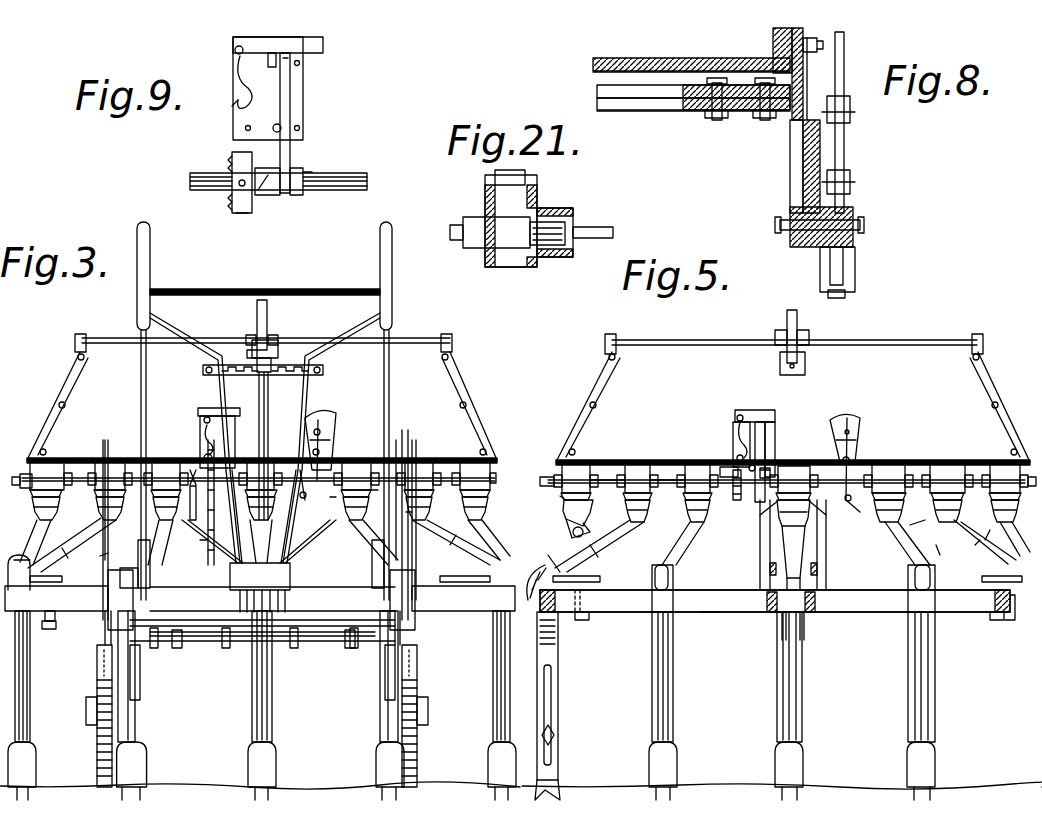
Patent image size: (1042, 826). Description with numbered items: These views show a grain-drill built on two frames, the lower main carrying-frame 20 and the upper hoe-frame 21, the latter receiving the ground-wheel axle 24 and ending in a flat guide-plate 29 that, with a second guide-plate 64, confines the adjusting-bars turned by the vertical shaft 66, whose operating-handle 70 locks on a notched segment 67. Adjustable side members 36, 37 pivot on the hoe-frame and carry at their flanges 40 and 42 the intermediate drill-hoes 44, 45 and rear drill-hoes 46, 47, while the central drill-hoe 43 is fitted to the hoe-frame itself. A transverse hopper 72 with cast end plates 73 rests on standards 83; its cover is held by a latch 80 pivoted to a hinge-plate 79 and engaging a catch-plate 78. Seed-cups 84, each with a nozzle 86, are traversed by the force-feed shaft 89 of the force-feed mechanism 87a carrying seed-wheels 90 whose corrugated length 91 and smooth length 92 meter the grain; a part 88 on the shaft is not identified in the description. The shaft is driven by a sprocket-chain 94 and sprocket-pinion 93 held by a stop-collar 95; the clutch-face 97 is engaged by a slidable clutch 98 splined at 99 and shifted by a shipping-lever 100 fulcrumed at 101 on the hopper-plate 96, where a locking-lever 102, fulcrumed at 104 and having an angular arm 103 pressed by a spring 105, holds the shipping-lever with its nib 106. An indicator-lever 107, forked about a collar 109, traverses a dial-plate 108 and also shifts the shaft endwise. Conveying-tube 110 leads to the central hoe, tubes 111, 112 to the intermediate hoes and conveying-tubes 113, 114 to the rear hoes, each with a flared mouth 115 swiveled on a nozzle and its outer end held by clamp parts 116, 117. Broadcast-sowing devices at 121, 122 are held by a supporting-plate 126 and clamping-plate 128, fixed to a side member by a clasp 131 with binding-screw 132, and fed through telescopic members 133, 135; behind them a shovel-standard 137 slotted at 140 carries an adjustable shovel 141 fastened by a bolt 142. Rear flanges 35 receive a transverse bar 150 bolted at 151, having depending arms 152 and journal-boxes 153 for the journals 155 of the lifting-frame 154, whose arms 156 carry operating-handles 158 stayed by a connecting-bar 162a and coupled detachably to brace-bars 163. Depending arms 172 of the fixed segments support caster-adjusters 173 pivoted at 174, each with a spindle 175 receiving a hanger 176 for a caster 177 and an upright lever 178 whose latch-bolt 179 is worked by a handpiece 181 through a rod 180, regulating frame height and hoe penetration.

In FIG. 8, the main carrying-frame 20 is at (632, 90).
In FIG. 3, the main carrying-frame 20 is at (310, 645).
In FIG. 3, the hoe-frame 21 is at (285, 600).
In FIG. 5, the hoe-frame 21 is at (815, 612).
In FIG. 5, the axle 24 is at (770, 612).
In FIG. 3, the guide-plate 29 is at (290, 575).
In FIG. 8, the flanges 35 is at (740, 95).
In FIG. 3, the flanges 35 is at (330, 665).
In FIG. 3, the adjustable side member 36 is at (463, 598).
In FIG. 5, the adjustable side member 36 is at (775, 601).
In FIG. 3, the adjustable side member 37 is at (80, 620).
In FIG. 5, the adjustable side member 37 is at (712, 608).
In FIG. 3, the flange 40 is at (385, 590).
In FIG. 5, the flange 40 is at (945, 602).
In FIG. 3, the flange 42 is at (40, 600).
In FIG. 3, the central drill-hoe 43 is at (272, 715).
In FIG. 5, the central drill-hoe 43 is at (802, 716).
In FIG. 3, the intermediate drill-hoe 44 is at (385, 740).
In FIG. 5, the intermediate drill-hoe 44 is at (935, 722).
In FIG. 3, the intermediate drill-hoe 45 is at (142, 735).
In FIG. 5, the intermediate drill-hoe 45 is at (673, 720).
In FIG. 3, the rear drill-hoe 46 is at (490, 688).
In FIG. 3, the rear drill-hoe 47 is at (30, 672).
In FIG. 3, the guide-plate 64 is at (217, 550).
In FIG. 3, the vertical shaft 66 is at (268, 405).
In FIG. 3, the segment 67 is at (240, 378).
In FIG. 3, the operating-handle 70 is at (247, 354).
In FIG. 3, the hopper 72 is at (116, 360).
In FIG. 5, the hopper 72 is at (680, 358).
In FIG. 3, the end plates 73 is at (478, 418).
In FIG. 5, the end plates 73 is at (995, 385).
In FIG. 3, the catch-plate 78 is at (248, 335).
In FIG. 5, the catch-plate 78 is at (778, 330).
In FIG. 3, the hinge-plate 79 is at (276, 345).
In FIG. 5, the hinge-plate 79 is at (805, 363).
In FIG. 3, the latch 80 is at (267, 313).
In FIG. 5, the latch 80 is at (797, 318).
In FIG. 5, the standards 83 is at (822, 548).
In FIG. 21, the seed-cups 84 is at (565, 198).
In FIG. 3, the seed-cups 84 is at (333, 505).
In FIG. 5, the seed-cups 84 is at (553, 500).
In FIG. 3, the nozzle 86 is at (498, 500).
In FIG. 5, the nozzle 86 is at (910, 500).
In FIG. 21, the force-feed mechanism 87a is at (515, 253).
In FIG. 3, the collar 88 is at (370, 490).
In FIG. 9, the force-feed shaft 89 is at (357, 190).
In FIG. 21, the force-feed shaft 89 is at (608, 227).
In FIG. 3, the force-feed shaft 89 is at (80, 478).
In FIG. 5, the force-feed shaft 89 is at (905, 481).
In FIG. 21, the force-feed seed-wheels 90 is at (485, 215).
In FIG. 3, the force-feed seed-wheels 90 is at (20, 484).
In FIG. 21, the corrugated length 91 is at (555, 222).
In FIG. 5, the corrugated length 91 is at (610, 478).
In FIG. 21, the smooth length 92 is at (487, 240).
In FIG. 5, the smooth length 92 is at (665, 478).
In FIG. 9, the sprocket-pinion 93 is at (240, 210).
In FIG. 5, the sprocket-pinion 93 is at (738, 498).
In FIG. 3, the sprocket-chain 94 is at (214, 530).
In FIG. 9, the stop-collar 95 is at (232, 170).
In FIG. 3, the stop-collar 95 is at (175, 515).
In FIG. 5, the stop-collar 95 is at (722, 478).
In FIG. 9, the hopper-plate 96 is at (303, 118).
In FIG. 5, the hopper-plate 96 is at (768, 438).
In FIG. 9, the clutch-face 97 is at (268, 195).
In FIG. 3, the clutch-face 97 is at (198, 497).
In FIG. 9, the slidable clutch 98 is at (300, 195).
In FIG. 9, the key or spline 99 is at (305, 172).
In FIG. 5, the key or spline 99 is at (768, 466).
In FIG. 9, the shipping-lever 100 is at (290, 92).
In FIG. 5, the shipping-lever 100 is at (765, 425).
In FIG. 9, the fulcrum 101 is at (281, 130).
In FIG. 5, the fulcrum 101 is at (755, 465).
In FIG. 9, the locking-lever 102 is at (323, 45).
In FIG. 3, the locking-lever 102 is at (238, 410).
In FIG. 5, the locking-lever 102 is at (740, 410).
In FIG. 9, the angular arm 103 is at (238, 62).
In FIG. 3, the angular arm 103 is at (200, 424).
In FIG. 5, the angular arm 103 is at (738, 430).
In FIG. 9, the fulcrum 104 is at (235, 48).
In FIG. 5, the fulcrum 104 is at (737, 418).
In FIG. 9, the spring 105 is at (237, 98).
In FIG. 3, the spring 105 is at (200, 445).
In FIG. 5, the spring 105 is at (733, 445).
In FIG. 9, the shoulder or nib 106 is at (290, 62).
In FIG. 5, the shoulder or nib 106 is at (770, 422).
In FIG. 3, the indicator-lever 107 is at (325, 450).
In FIG. 5, the indicator-lever 107 is at (855, 445).
In FIG. 3, the dial-plate 108 is at (336, 425).
In FIG. 5, the dial-plate 108 is at (858, 420).
In FIG. 3, the collar 109 is at (315, 500).
In FIG. 5, the collar 109 is at (855, 508).
In FIG. 3, the conveying-tube 110 is at (272, 530).
In FIG. 5, the conveying-tube 110 is at (772, 545).
In FIG. 3, the conveying-tube 111 is at (378, 550).
In FIG. 5, the conveying-tube 111 is at (900, 560).
In FIG. 3, the conveying-tube 112 is at (168, 542).
In FIG. 5, the conveying-tube 112 is at (692, 545).
In FIG. 3, the conveying-tube 113 is at (492, 532).
In FIG. 5, the conveying-tube 113 is at (1015, 530).
In FIG. 3, the conveying-tube 114 is at (30, 535).
In FIG. 5, the conveying-tube 114 is at (570, 522).
In FIG. 3, the flared mouth 115 is at (412, 510).
In FIG. 5, the flared mouth 115 is at (690, 527).
In FIG. 3, the clamp part 116 is at (130, 550).
In FIG. 5, the clamp part 116 is at (942, 554).
In FIG. 3, the clamp part 117 is at (30, 540).
In FIG. 5, the clamp part 117 is at (680, 578).
In FIG. 5, the broadcast-sowing device 121 is at (1012, 600).
In FIG. 5, the broadcast-sowing device 122 is at (538, 612).
In FIG. 3, the supporting-plate 126 is at (450, 573).
In FIG. 5, the supporting-plate 126 is at (980, 574).
In FIG. 3, the clamping-plate 128 is at (97, 546).
In FIG. 5, the clamping-plate 128 is at (555, 560).
In FIG. 5, the clasp 131 is at (1015, 615).
In FIG. 3, the binding-screw 132 is at (48, 630).
In FIG. 5, the binding-screw 132 is at (990, 642).
In FIG. 5, the telescopic tube member 133 is at (967, 541).
In FIG. 3, the telescopic tube 135 is at (460, 555).
In FIG. 5, the telescopic tube 135 is at (990, 553).
In FIG. 5, the shovel-standard 137 is at (558, 655).
In FIG. 5, the slot 140 is at (551, 700).
In FIG. 5, the adjustable shovel 141 is at (555, 775).
In FIG. 5, the bolt 142 is at (551, 747).
In FIG. 8, the transverse bar 150 is at (662, 105).
In FIG. 3, the transverse bar 150 is at (190, 643).
In FIG. 3, the bolts 151 is at (360, 660).
In FIG. 8, the depending vertical arms 152 is at (795, 142).
In FIG. 3, the depending vertical arms 152 is at (375, 688).
In FIG. 8, the journal-boxes 153 is at (807, 68).
In FIG. 3, the journal-boxes 153 is at (390, 610).
In FIG. 8, the lifting frame 154 is at (627, 58).
In FIG. 3, the lifting frame 154 is at (240, 630).
In FIG. 8, the journals 155 is at (822, 43).
In FIG. 3, the upwardly-extending arms 156 is at (360, 540).
In FIG. 3, the operating-handles 158 is at (350, 382).
In FIG. 3, the connecting-bar 162a is at (288, 296).
In FIG. 3, the brace-bars 163 is at (303, 410).
In FIG. 5, the brace-bars 163 is at (845, 560).
In FIG. 8, the depending arms 172 is at (803, 135).
In FIG. 3, the depending arms 172 is at (366, 718).
In FIG. 8, the caster-adjuster 173 is at (853, 212).
In FIG. 8, the pivot 174 is at (864, 225).
In FIG. 8, the spindle 175 is at (843, 280).
In FIG. 8, the hanger 176 is at (855, 262).
In FIG. 3, the hanger 176 is at (440, 712).
In FIG. 3, the caster 177 is at (428, 668).
In FIG. 8, the upright lever 178 is at (844, 137).
In FIG. 3, the upright lever 178 is at (418, 460).
In FIG. 3, the latch-bolt 179 is at (420, 640).
In FIG. 3, the rod 180 is at (345, 530).
In FIG. 3, the handpiece 181 is at (408, 445).